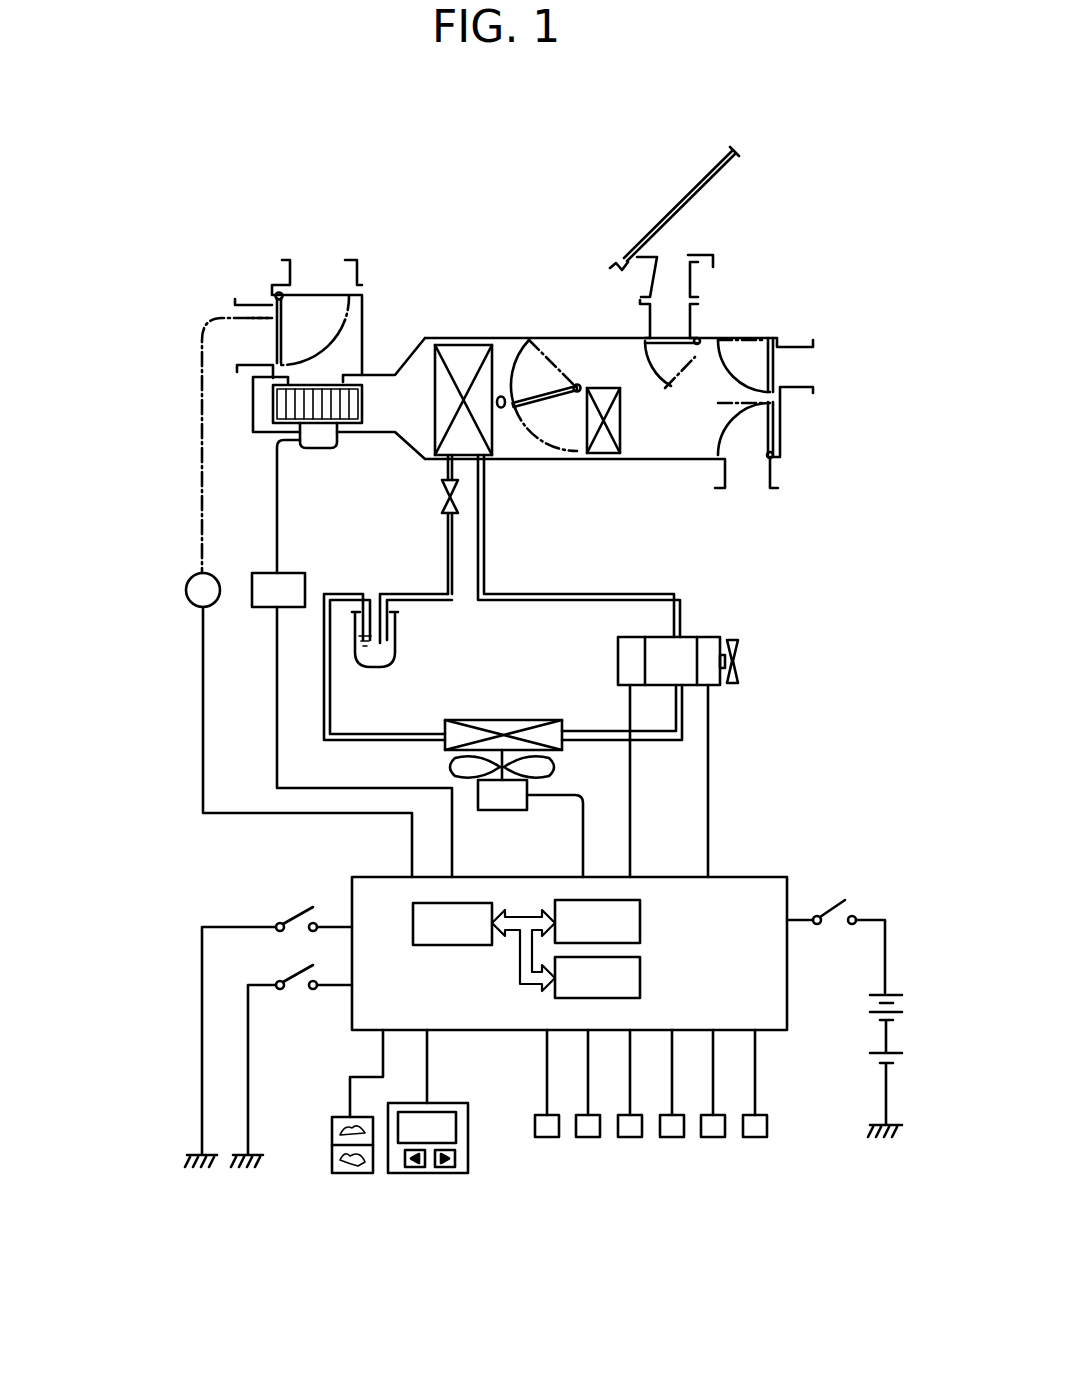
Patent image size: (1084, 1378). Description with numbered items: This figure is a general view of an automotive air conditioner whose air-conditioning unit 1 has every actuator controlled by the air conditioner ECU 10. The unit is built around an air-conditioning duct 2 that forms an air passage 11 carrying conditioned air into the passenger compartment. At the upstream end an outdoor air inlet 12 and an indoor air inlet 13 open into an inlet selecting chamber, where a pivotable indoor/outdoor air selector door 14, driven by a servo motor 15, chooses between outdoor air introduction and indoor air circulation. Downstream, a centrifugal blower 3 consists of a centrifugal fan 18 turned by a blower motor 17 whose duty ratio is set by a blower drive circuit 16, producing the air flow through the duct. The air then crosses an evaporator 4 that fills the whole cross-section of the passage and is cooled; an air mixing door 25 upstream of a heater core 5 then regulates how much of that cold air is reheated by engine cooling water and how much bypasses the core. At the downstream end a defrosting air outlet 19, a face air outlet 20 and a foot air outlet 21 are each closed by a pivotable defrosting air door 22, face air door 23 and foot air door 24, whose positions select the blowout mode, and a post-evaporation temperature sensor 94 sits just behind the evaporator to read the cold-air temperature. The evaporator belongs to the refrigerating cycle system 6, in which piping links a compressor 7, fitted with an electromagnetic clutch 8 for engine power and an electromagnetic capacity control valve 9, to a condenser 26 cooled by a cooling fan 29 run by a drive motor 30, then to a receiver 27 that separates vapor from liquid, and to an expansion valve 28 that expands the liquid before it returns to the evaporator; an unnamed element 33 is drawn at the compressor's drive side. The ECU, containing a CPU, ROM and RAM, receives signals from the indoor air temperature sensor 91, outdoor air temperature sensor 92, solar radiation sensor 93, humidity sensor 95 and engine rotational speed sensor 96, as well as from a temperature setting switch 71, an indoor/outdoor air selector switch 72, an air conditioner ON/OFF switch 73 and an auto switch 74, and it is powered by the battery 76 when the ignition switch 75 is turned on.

The air-conditioning unit 1 is at (432, 258).
The air-conditioning duct 2 is at (518, 338).
The centrifugal blower 3 is at (247, 438).
The evaporator 4 is at (465, 362).
The heater core 5 is at (605, 443).
The refrigerating cycle system 6 is at (320, 712).
The compressor 7 is at (682, 648).
The electromagnetic clutch 8 is at (632, 657).
The electromagnetic capacity control valve 9 is at (707, 647).
The air conditioner ECU 10 is at (752, 887).
The air passage 11 is at (690, 442).
The outdoor air inlet 12 is at (313, 270).
The indoor air inlet 13 is at (242, 312).
The indoor/outdoor air selector door 14 is at (273, 338).
The servo motor 15 is at (200, 585).
The blower drive circuit 16 is at (272, 585).
The blower motor 17 is at (322, 452).
The centrifugal fan 18 is at (273, 405).
The defrosting air outlet 19 is at (670, 255).
The face air outlet 20 is at (806, 363).
The foot air outlet 21 is at (745, 482).
The defrosting air door 22 is at (667, 342).
The face air door 23 is at (771, 370).
The foot air door 24 is at (772, 427).
The air mixing door 25 is at (555, 386).
The condenser 26 is at (505, 727).
The receiver 27 is at (376, 660).
The expansion valve 28 is at (443, 496).
The cooling fan 29 is at (447, 768).
The drive motor 30 is at (503, 810).
The pulley 33 is at (736, 645).
The temperature setting switch 71 is at (432, 1175).
The indoor/outdoor air selector switch 72 is at (352, 1175).
The air conditioner ON/OFF switch 73 is at (292, 910).
The auto switch 74 is at (292, 970).
The ignition switch 75 is at (828, 902).
The battery 76 is at (893, 990).
The indoor air temperature sensor 91 is at (547, 1140).
The outdoor air temperature sensor 92 is at (588, 1140).
The solar radiation sensor 93 is at (630, 1140).
The post-evaporation temperature sensor 94 is at (503, 410).
The humidity sensor 95 is at (713, 1140).
The rotational speed sensor 96 is at (755, 1140).